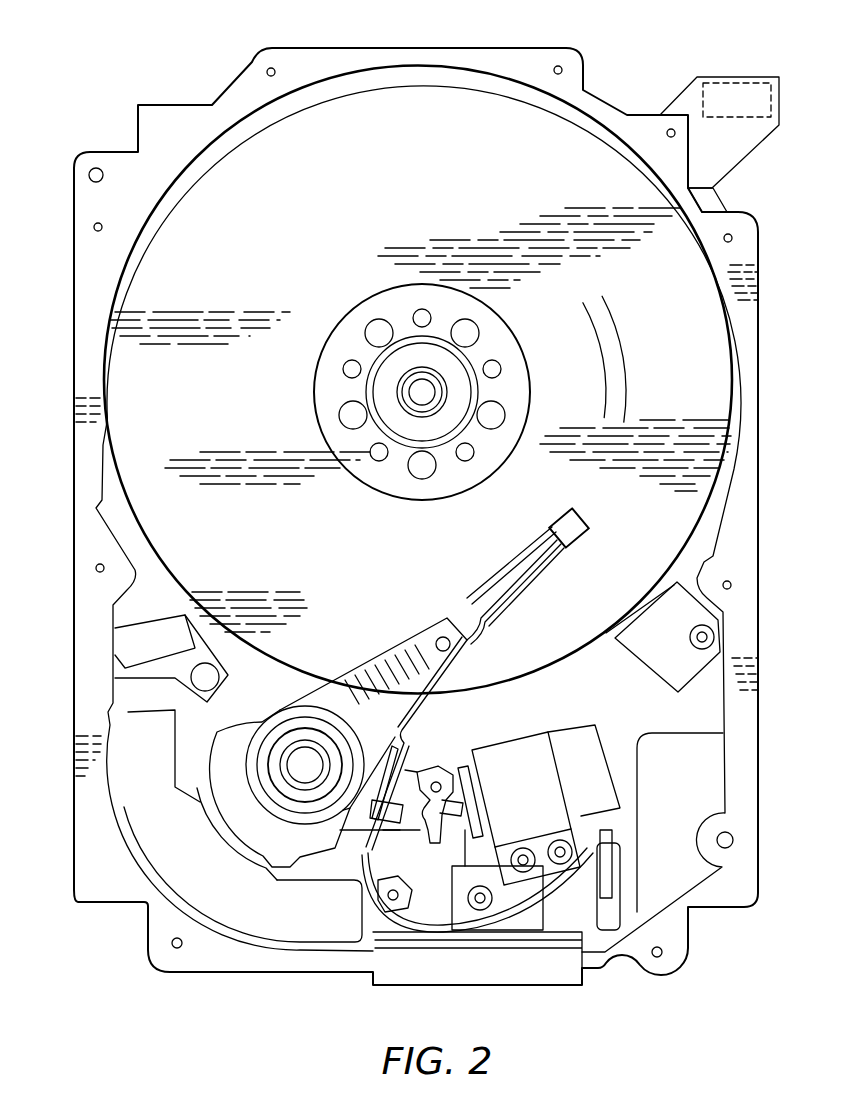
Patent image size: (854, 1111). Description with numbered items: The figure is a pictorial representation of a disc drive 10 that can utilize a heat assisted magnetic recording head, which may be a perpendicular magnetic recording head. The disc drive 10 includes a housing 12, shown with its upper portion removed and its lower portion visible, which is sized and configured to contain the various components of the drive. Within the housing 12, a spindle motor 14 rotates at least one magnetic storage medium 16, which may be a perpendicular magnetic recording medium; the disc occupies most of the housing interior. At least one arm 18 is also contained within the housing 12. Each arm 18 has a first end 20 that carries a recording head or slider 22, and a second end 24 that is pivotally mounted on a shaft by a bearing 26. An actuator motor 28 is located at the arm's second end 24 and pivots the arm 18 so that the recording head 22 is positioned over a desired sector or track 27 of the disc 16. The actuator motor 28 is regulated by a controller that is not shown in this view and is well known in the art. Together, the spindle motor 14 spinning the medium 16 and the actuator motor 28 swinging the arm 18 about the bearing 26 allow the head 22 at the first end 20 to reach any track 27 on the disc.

The disc drive 10 is at (118, 96).
The housing 12 is at (540, 58).
The spindle motor 14 is at (415, 394).
The magnetic storage medium 16 is at (316, 205).
The arm 18 is at (412, 657).
The first end 20 is at (512, 560).
The recording head 22 is at (575, 524).
The second end 24 is at (328, 708).
The bearing 26 is at (297, 757).
The track 27 is at (612, 367).
The actuator motor 28 is at (183, 876).